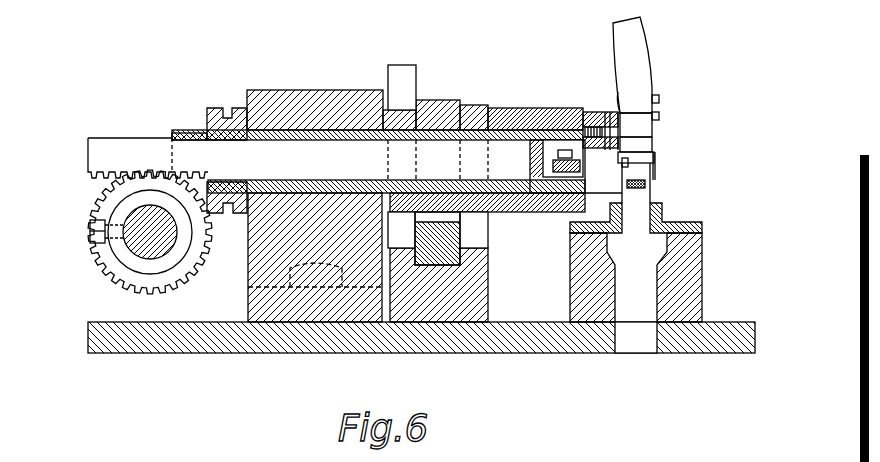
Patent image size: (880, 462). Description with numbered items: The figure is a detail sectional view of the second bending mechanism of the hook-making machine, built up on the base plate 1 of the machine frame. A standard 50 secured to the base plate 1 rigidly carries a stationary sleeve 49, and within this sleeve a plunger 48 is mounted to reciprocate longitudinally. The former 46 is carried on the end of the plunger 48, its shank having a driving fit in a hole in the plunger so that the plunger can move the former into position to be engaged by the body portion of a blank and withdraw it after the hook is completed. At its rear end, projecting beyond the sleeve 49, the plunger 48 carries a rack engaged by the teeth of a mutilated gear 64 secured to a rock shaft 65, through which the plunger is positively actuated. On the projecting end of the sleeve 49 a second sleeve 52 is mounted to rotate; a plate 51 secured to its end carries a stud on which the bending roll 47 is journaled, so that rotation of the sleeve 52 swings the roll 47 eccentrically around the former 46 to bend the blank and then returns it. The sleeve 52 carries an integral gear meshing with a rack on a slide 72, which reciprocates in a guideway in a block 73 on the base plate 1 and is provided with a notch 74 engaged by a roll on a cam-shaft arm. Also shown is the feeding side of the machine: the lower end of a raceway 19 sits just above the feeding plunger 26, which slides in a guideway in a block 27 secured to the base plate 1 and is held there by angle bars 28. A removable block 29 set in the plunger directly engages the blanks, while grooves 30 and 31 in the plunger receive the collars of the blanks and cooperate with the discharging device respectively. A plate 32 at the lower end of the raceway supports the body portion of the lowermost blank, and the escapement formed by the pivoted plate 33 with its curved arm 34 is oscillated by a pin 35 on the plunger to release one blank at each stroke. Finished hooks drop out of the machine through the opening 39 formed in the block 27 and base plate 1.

The base plate 1 is at (215, 340).
The raceway 19 is at (643, 72).
The feeding plunger 26 is at (645, 197).
The block 27 is at (692, 291).
The angle bars 28 is at (663, 214).
The block 29 is at (622, 197).
The groove 30 is at (626, 161).
The groove 31 is at (655, 161).
The plate 32 is at (555, 168).
The plate 33 is at (642, 127).
The curved arm 34 is at (618, 92).
The pin 35 is at (648, 177).
The opening 39 is at (632, 336).
The former 46 is at (610, 137).
The bending roll 47 is at (615, 107).
The plunger 48 is at (120, 150).
The sleeve 49 is at (262, 133).
The standard 50 is at (335, 100).
The plate 51 is at (592, 108).
The sleeve 52 is at (500, 112).
The mutilated gear 64 is at (103, 213).
The rock shaft 65 is at (162, 233).
The slide 72 is at (455, 242).
The block 73 is at (478, 302).
The notch 74 is at (435, 108).